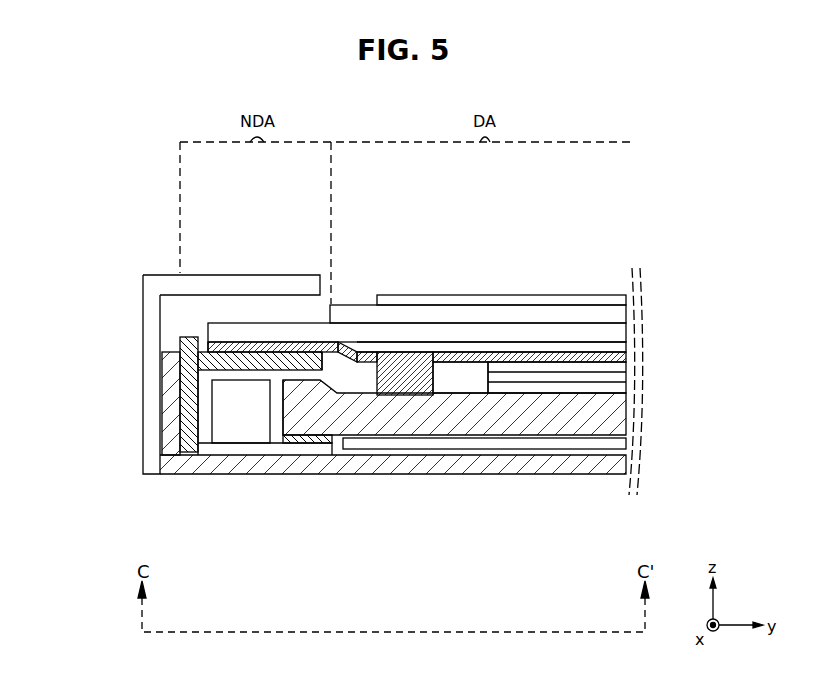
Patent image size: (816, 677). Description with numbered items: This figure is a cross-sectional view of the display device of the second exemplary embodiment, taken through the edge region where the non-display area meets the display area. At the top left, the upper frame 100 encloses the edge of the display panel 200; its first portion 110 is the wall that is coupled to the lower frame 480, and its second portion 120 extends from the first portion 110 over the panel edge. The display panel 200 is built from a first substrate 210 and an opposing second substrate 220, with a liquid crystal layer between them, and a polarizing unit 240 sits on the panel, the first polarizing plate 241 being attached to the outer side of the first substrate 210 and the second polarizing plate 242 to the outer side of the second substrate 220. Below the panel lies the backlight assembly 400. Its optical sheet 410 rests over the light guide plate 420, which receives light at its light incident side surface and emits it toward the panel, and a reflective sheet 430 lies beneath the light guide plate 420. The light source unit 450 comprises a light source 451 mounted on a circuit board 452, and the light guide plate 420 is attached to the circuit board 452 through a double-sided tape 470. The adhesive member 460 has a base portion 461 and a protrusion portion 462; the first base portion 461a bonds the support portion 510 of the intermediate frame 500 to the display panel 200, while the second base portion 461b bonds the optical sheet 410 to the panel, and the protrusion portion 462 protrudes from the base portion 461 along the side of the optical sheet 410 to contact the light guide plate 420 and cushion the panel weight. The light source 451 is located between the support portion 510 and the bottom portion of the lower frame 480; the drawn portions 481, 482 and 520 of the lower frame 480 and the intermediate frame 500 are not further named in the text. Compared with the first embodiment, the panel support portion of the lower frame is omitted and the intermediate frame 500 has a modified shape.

The upper frame 100 is at (172, 362).
The first portion 110 is at (152, 318).
The second portion 120 is at (178, 274).
The display panel 200 is at (417, 267).
The first substrate 210 is at (505, 333).
The second substrate 220 is at (542, 315).
The polarizing unit 240 is at (501, 272).
The first polarizing plate 241 is at (573, 348).
The second polarizing plate 242 is at (609, 300).
The backlight assembly 400 is at (479, 355).
The optical sheet 410 is at (593, 378).
The light guide plate 420 is at (617, 415).
The reflective sheet 430 is at (617, 440).
The light source unit 450 is at (448, 468).
The light source 451 is at (232, 428).
The circuit board 452 is at (292, 448).
The adhesive member 460 is at (453, 274).
The base portion 461 is at (491, 294).
The first base portion 461a is at (366, 358).
The second base portion 461b is at (453, 357).
The protrusion portion 462 is at (388, 380).
The double-sided tape 470 is at (312, 436).
The lower frame 480 is at (361, 424).
The first adhesive portion 481 is at (200, 468).
The second adhesive portion 482 is at (168, 424).
The intermediate frame 500 is at (173, 394).
The support portion 510 is at (238, 362).
The bracket vertical portion 520 is at (188, 397).